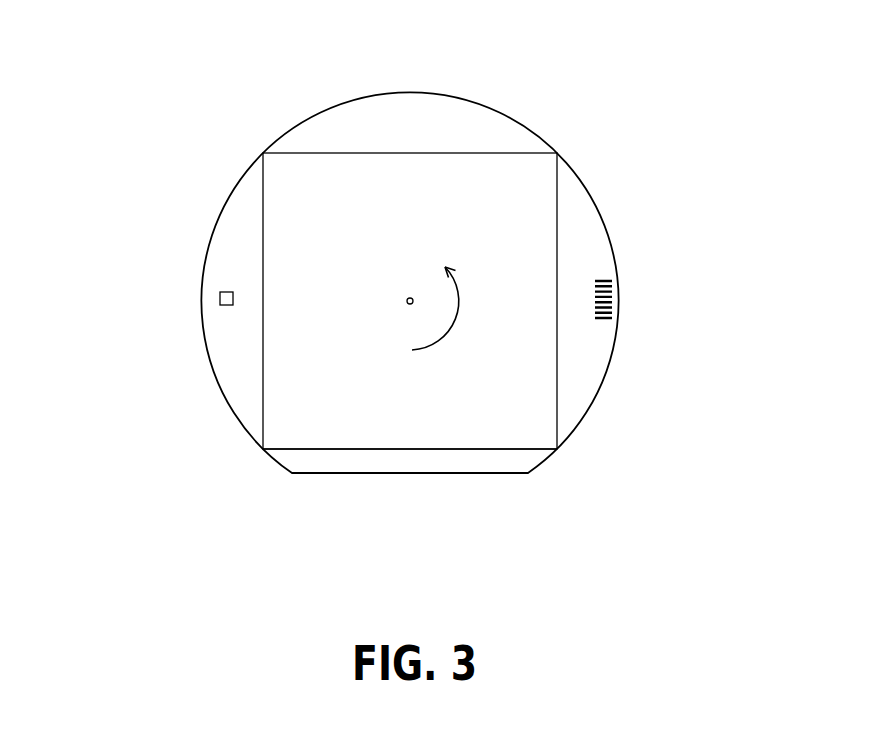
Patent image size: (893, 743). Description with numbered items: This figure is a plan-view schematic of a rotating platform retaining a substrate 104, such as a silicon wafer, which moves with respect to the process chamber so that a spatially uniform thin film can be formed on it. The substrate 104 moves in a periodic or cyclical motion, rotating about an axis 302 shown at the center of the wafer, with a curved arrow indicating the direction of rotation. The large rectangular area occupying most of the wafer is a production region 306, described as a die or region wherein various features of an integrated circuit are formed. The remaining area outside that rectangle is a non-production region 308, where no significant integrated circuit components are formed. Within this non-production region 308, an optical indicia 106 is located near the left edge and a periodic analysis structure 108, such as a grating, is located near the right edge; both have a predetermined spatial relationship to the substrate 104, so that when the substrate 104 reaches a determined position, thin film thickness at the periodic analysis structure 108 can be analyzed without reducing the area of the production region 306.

The substrate 104 is at (608, 372).
The optical indicia 106 is at (220, 300).
The periodic analysis structure 108 is at (608, 301).
The axis 302 is at (406, 302).
The production region 306 is at (478, 185).
The non-production region 308 is at (572, 396).